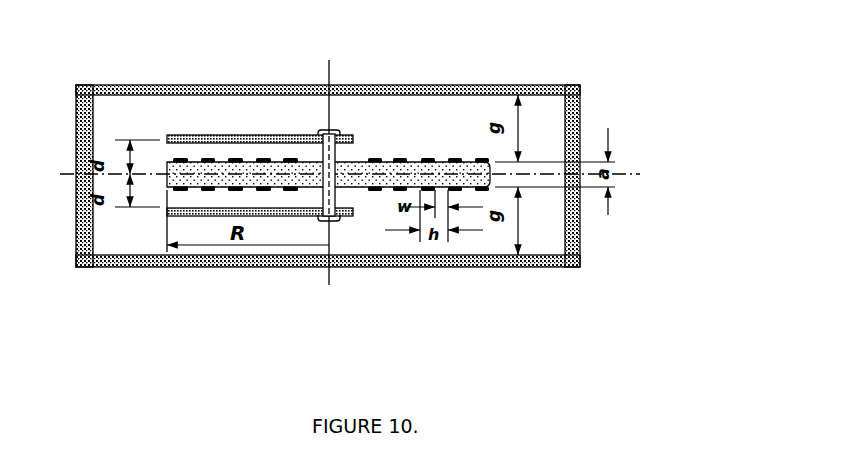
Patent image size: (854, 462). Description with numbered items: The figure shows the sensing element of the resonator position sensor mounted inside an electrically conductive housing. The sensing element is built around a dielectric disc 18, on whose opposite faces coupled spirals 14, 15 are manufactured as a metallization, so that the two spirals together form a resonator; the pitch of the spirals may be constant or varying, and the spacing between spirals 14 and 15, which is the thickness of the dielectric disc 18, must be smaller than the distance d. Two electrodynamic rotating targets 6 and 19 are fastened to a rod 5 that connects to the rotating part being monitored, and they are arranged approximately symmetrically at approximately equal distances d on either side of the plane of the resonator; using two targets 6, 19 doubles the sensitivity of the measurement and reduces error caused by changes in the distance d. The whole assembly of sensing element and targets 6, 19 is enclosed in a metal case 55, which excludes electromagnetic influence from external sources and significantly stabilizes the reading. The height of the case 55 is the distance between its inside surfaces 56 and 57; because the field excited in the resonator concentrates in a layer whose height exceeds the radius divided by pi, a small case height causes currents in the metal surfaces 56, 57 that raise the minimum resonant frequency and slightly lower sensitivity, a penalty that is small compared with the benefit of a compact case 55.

The rod 5 is at (337, 218).
The rotating target 6 is at (198, 136).
The coupled spiral 14 is at (263, 160).
The coupled spiral 15 is at (185, 189).
The dielectric disc 18 is at (360, 163).
The rotating target 19 is at (193, 218).
The metal case 55 is at (582, 100).
The inside surface 56 is at (277, 92).
The inside surface 57 is at (263, 256).